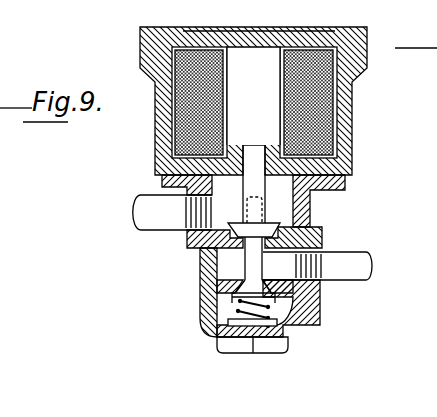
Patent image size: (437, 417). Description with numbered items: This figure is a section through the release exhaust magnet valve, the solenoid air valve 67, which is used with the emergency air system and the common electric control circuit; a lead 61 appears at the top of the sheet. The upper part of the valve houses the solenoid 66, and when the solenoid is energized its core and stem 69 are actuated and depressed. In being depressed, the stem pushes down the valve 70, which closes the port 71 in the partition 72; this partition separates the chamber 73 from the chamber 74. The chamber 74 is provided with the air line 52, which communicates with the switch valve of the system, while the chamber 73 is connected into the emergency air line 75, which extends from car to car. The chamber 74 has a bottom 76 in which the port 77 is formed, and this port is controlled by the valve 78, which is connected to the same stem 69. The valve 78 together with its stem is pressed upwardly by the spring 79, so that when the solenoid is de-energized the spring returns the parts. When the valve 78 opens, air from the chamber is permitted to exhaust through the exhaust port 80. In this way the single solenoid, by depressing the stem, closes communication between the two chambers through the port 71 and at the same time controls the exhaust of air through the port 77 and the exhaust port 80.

The air line 52 is at (353, 263).
The conduit 61 is at (108, 2).
The solenoid 66 is at (188, 129).
The solenoid air valve 67 is at (340, 151).
The core and stem 69 is at (257, 67).
The valve 70 is at (278, 222).
The port 71 is at (293, 224).
The partition 72 is at (230, 249).
The chamber 73 is at (298, 193).
The chamber 74 is at (286, 274).
The emergency air line 75 is at (155, 221).
The bottom 76 is at (233, 295).
The port 77 is at (222, 272).
The valve 78 is at (232, 304).
The spring 79 is at (216, 330).
The exhaust port 80 is at (316, 308).